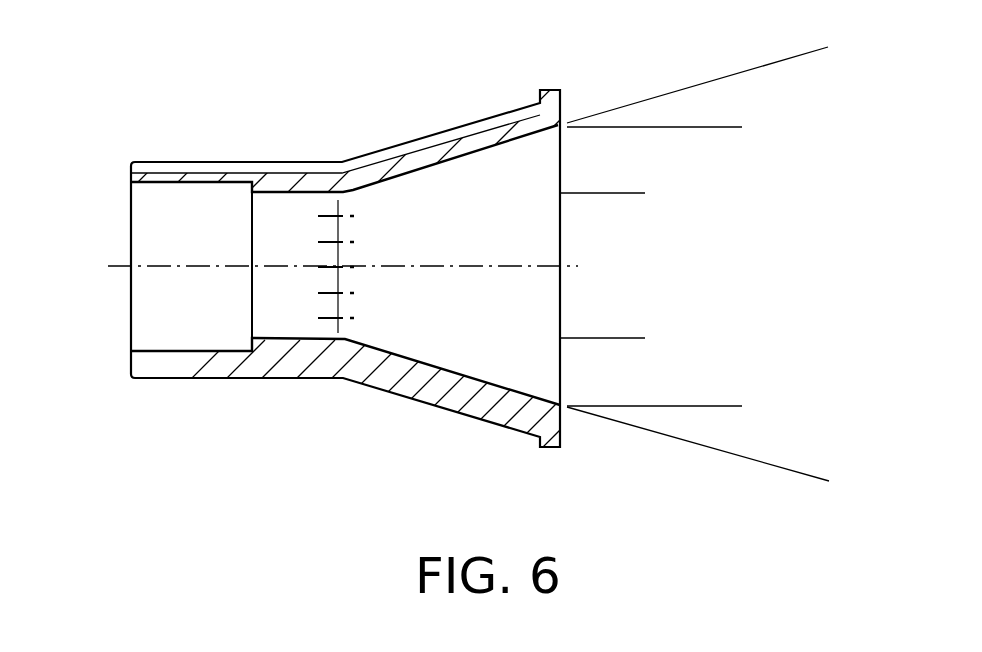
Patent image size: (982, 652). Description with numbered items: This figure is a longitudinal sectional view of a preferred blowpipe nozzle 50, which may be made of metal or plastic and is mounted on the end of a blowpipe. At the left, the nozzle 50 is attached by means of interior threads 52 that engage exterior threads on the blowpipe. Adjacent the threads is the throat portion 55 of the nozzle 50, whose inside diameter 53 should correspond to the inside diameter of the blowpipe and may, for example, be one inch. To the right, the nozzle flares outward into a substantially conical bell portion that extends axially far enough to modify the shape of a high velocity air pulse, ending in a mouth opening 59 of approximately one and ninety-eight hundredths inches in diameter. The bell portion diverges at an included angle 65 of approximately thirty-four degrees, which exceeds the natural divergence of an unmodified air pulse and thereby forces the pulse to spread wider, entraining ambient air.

The blowpipe nozzle 50 is at (107, 95).
The interior threads 52 is at (193, 350).
The inside diameter 53 is at (630, 326).
The throat portion 55 is at (292, 338).
The mouth opening 59 is at (728, 394).
The included angle 65 is at (822, 62).